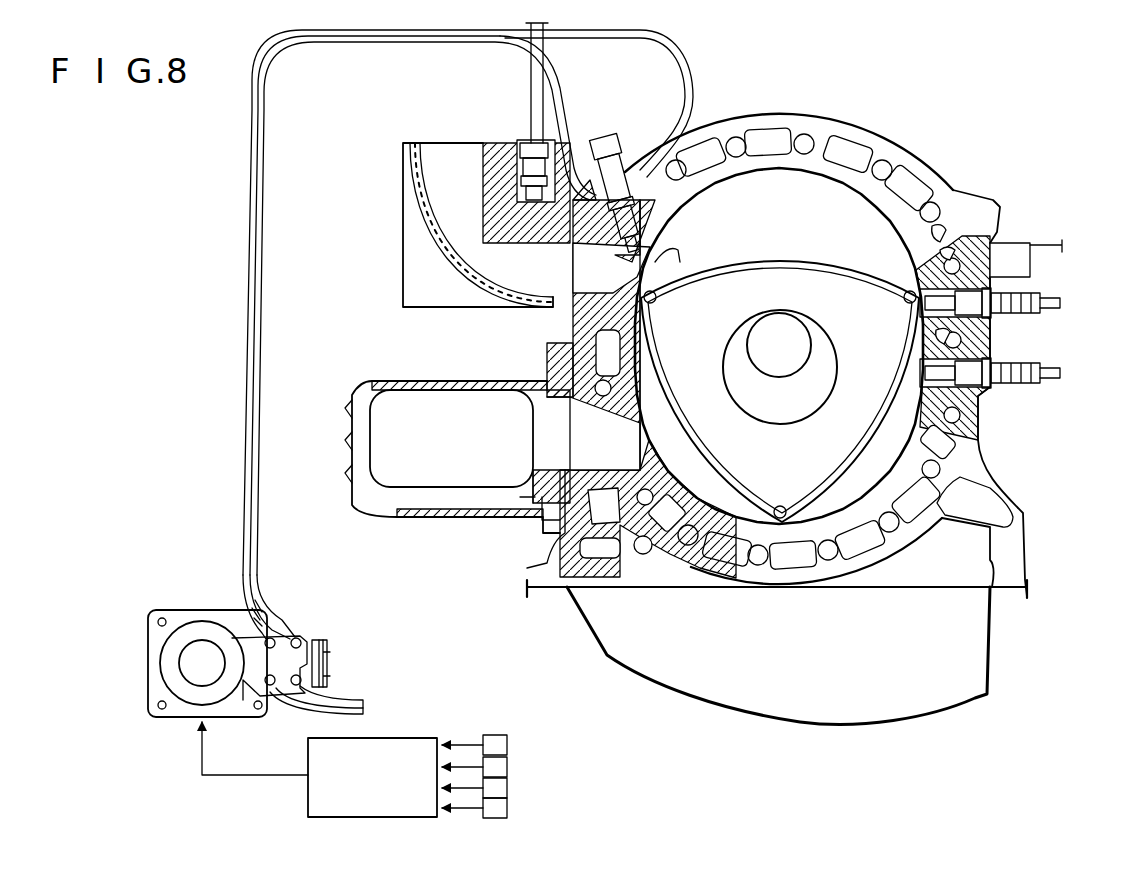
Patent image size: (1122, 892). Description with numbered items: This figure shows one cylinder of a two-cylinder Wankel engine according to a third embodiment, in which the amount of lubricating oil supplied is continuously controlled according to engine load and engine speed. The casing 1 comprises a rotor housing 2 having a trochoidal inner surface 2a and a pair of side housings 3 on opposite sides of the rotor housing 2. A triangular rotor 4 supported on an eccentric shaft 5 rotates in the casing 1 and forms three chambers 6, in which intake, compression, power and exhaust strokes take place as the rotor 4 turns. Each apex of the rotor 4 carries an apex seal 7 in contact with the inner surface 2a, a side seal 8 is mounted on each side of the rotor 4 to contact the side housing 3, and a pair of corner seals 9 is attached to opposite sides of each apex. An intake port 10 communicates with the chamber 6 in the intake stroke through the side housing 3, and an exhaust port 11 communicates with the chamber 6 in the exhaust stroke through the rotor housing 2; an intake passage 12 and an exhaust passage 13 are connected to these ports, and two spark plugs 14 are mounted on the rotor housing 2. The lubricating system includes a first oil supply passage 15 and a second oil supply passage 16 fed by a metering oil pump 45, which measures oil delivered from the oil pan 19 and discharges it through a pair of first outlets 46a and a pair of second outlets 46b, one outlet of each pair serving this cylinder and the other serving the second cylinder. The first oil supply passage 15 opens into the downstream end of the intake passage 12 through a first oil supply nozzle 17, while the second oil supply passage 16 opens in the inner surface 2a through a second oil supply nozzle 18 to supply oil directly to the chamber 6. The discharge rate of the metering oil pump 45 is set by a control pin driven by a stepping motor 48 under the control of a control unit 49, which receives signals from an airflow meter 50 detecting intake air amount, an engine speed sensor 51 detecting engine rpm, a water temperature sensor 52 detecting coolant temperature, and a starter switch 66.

The casing 1 is at (862, 108).
The rotor housing 2 is at (918, 160).
The trochoidal inner surface 2a is at (836, 172).
The side housing 3 is at (772, 183).
The triangular rotor 4 is at (810, 268).
The eccentric shaft 5 is at (786, 330).
The chamber 6 is at (792, 222).
The apex seal 7 is at (906, 288).
The side seal 8 is at (745, 272).
The corner seal 9 is at (658, 300).
The intake port 10 is at (680, 248).
The exhaust port 11 is at (647, 448).
The intake passage 12 is at (457, 207).
The exhaust passage 13 is at (468, 407).
The spark plugs 14 is at (1062, 303).
The first oil supply passage 15 is at (500, 57).
The second oil supply passage 16 is at (689, 75).
The first oil supply nozzle 17 is at (518, 156).
The second oil supply nozzle 18 is at (625, 148).
The oil pan 19 is at (853, 724).
The metering oil pump 45 is at (316, 624).
The first outlets 46a is at (274, 638).
The second outlets 46b is at (316, 643).
The stepping motor 48 is at (197, 630).
The control unit 49 is at (413, 742).
The airflow meter 50 is at (510, 743).
The engine speed sensor 51 is at (510, 768).
The water temperature sensor 52 is at (510, 788).
The starter switch 66 is at (510, 810).